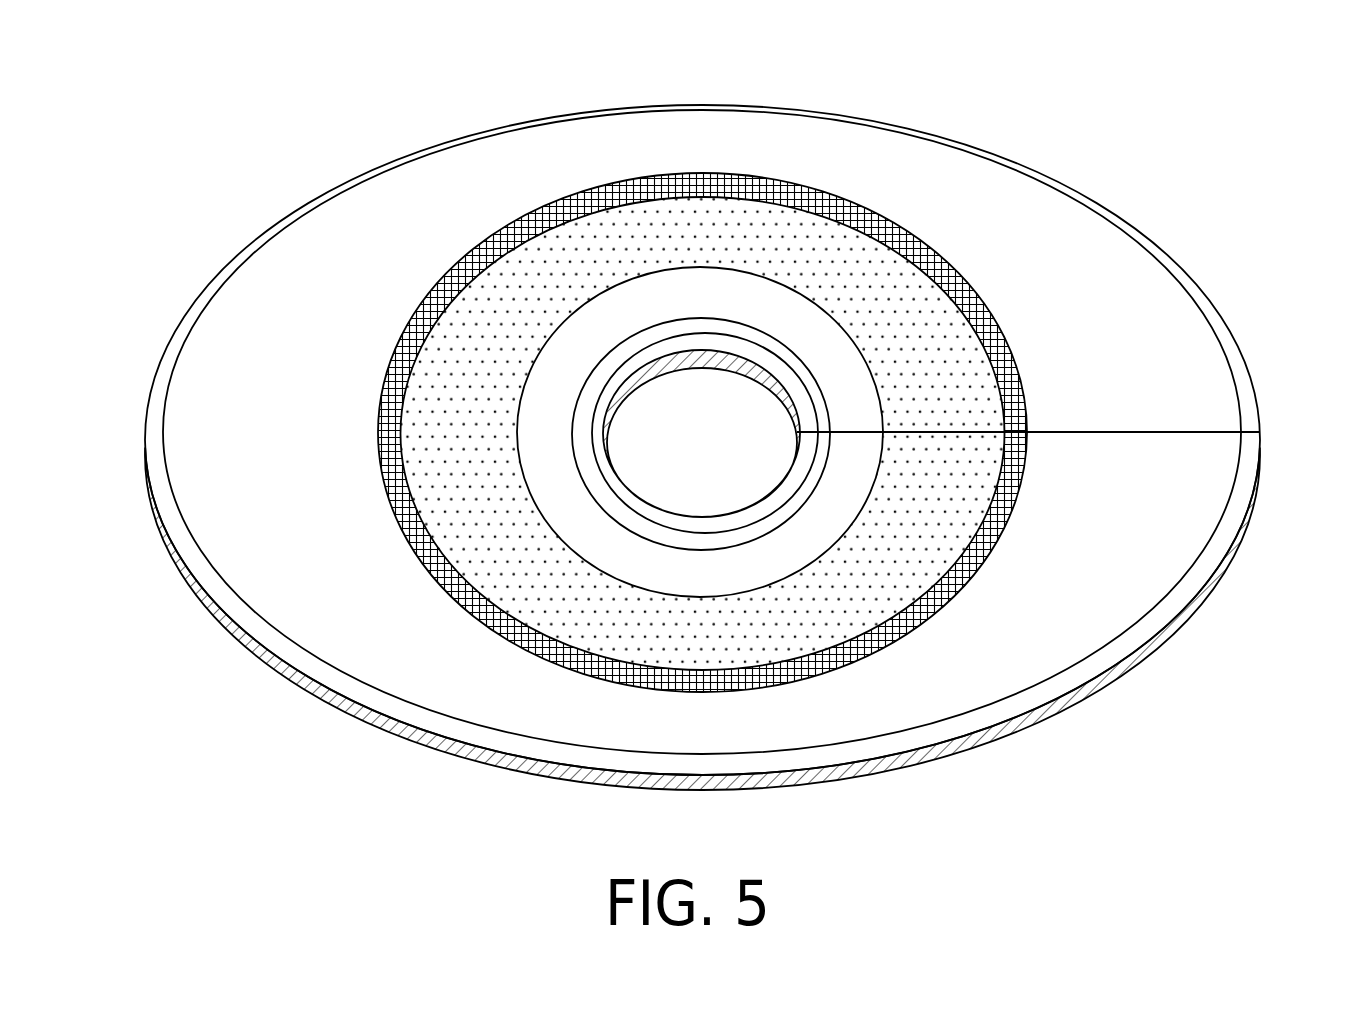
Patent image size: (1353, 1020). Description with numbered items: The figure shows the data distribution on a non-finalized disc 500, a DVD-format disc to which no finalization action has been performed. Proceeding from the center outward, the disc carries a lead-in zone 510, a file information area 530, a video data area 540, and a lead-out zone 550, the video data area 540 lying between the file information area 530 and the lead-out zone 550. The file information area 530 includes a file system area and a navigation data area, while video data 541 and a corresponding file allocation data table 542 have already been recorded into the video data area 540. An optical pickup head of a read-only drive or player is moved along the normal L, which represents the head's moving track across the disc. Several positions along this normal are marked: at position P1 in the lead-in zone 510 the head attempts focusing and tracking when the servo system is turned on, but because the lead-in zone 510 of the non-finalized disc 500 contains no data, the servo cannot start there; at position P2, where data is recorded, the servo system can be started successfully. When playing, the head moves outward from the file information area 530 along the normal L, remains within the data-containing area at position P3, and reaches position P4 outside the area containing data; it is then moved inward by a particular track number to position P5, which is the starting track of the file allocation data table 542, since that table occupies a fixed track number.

The non-finalized disc 500 is at (719, 410).
The lead-in zone 510 is at (702, 327).
The file information area 530 is at (750, 298).
The video data area 540 is at (541, 155).
The video data 541 is at (842, 262).
The file allocation data table 542 is at (903, 235).
The lead-out zone 550 is at (1250, 416).
The normal L is at (1155, 435).
The position P1 is at (822, 440).
The position P2 is at (902, 440).
The position P3 is at (975, 425).
The position P4 is at (1031, 440).
The position P5 is at (1005, 423).